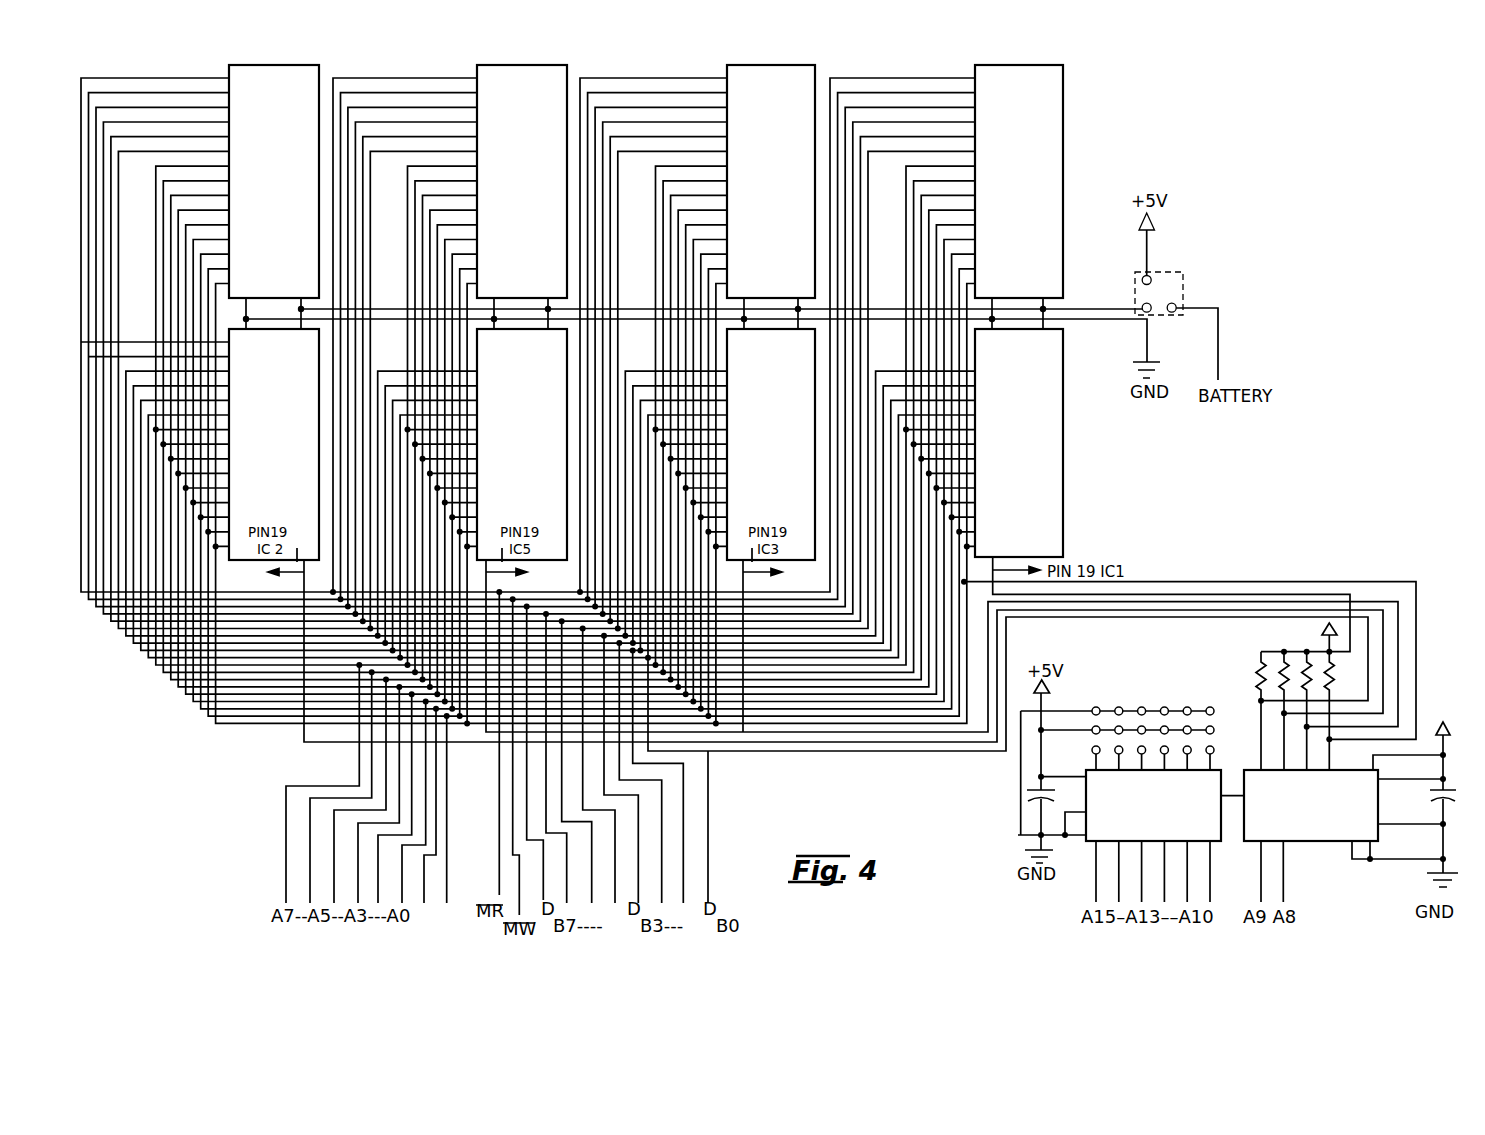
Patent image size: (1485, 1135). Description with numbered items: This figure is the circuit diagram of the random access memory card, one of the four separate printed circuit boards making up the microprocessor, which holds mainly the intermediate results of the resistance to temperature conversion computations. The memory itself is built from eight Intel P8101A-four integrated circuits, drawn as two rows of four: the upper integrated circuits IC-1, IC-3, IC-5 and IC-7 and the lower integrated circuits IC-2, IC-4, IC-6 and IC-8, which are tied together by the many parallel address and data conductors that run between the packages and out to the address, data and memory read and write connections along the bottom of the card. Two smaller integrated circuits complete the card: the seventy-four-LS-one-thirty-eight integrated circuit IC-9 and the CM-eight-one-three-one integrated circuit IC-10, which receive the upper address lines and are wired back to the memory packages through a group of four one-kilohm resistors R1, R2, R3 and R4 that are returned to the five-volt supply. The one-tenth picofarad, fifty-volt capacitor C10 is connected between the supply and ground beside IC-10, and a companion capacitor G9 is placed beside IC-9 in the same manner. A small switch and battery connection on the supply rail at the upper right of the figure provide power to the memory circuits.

The integrated circuit IC-1 is at (1019, 181).
The integrated circuit IC-2 is at (1019, 443).
The integrated circuit IC-3 is at (771, 181).
The integrated circuit IC-4 is at (771, 444).
The integrated circuit IC-5 is at (522, 181).
The integrated circuit IC-6 is at (522, 444).
The integrated circuit IC-7 is at (274, 181).
The integrated circuit IC-8 is at (274, 444).
The integrated circuit IC-9 is at (1311, 805).
The integrated circuit IC-10 is at (1153, 805).
The resistor R1 is at (1343, 711).
The resistor R2 is at (1307, 663).
The resistor R3 is at (1283, 663).
The resistor R4 is at (1244, 711).
The capacitor C10 is at (1052, 809).
The decoupling capacitor G9 is at (1429, 811).